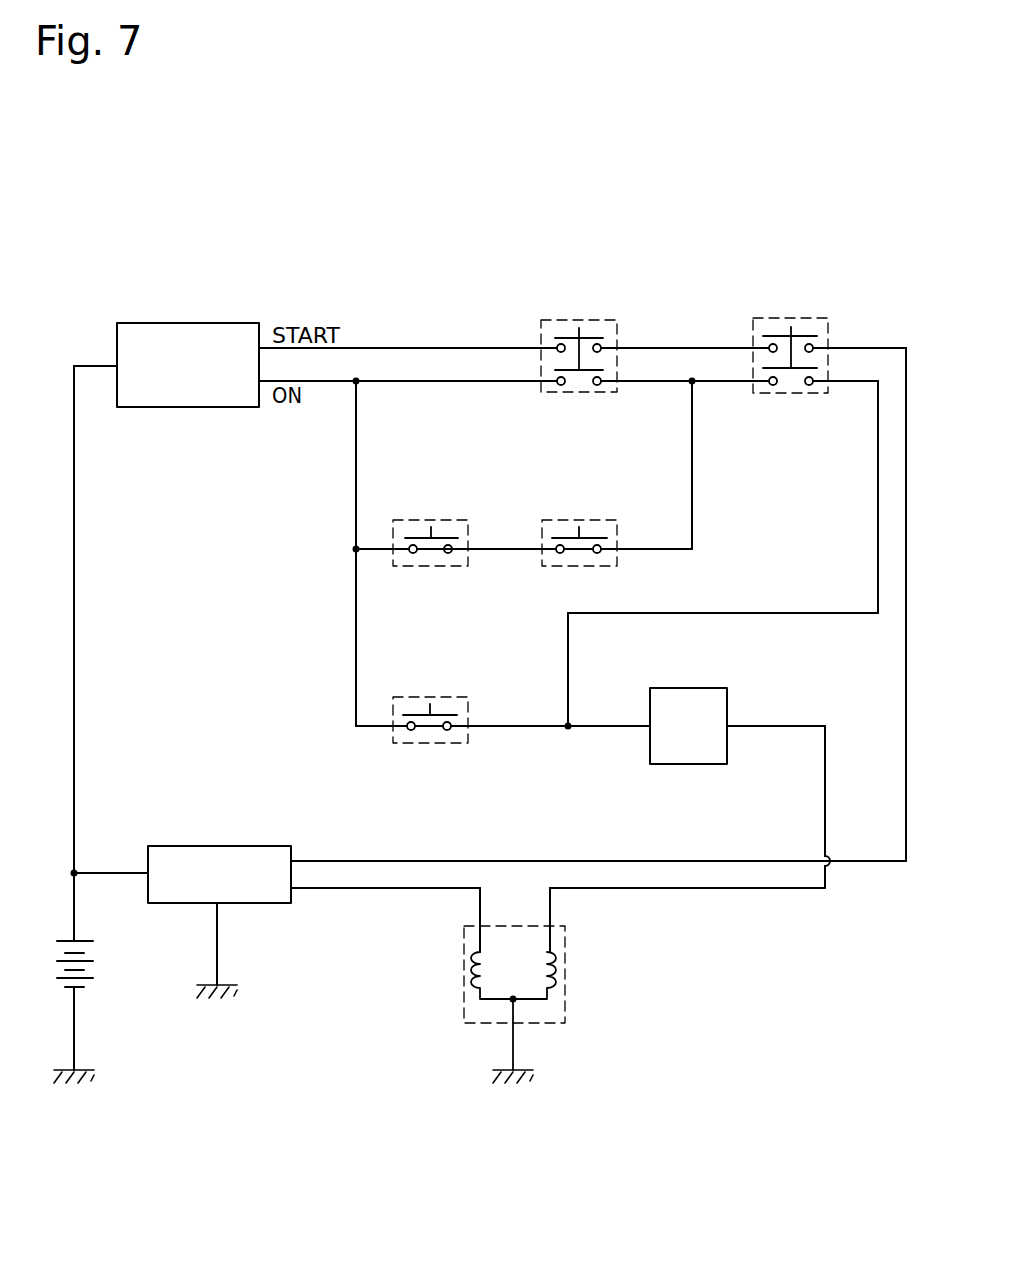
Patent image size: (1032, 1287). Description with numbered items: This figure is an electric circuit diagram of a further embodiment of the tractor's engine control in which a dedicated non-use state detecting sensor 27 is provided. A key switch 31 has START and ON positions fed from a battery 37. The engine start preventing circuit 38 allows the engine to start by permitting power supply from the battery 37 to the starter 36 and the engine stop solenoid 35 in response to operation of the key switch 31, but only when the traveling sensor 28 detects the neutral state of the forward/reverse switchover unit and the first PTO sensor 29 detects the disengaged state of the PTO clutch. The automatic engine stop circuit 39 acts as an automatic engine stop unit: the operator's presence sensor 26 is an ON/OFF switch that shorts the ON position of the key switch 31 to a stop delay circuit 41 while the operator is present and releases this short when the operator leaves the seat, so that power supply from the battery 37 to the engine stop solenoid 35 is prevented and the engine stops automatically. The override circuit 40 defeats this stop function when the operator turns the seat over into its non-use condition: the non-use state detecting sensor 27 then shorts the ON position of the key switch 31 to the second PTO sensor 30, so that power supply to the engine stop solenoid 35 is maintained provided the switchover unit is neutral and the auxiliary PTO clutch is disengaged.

The operator's presence sensor 26 is at (470, 735).
The non-use state detecting sensor 27 is at (437, 520).
The traveling sensor 28 is at (795, 318).
The first PTO sensor 29 is at (541, 340).
The second PTO sensor 30 is at (542, 537).
The key switch 31 is at (200, 323).
The engine stop solenoid 35 is at (565, 962).
The starter 36 is at (196, 846).
The battery 37 is at (90, 982).
The engine start preventing circuit 38 is at (726, 285).
The automatic engine stop circuit 39 is at (318, 731).
The override circuit 40 is at (326, 512).
The stop delay circuit 41 is at (688, 765).